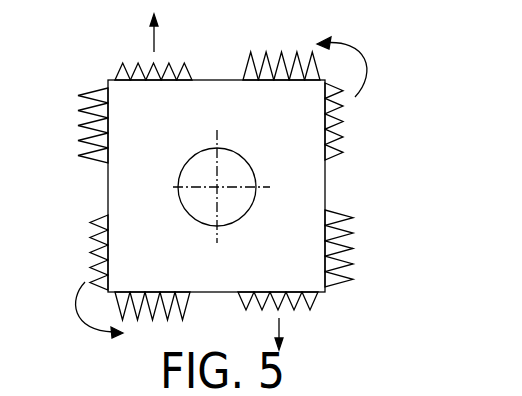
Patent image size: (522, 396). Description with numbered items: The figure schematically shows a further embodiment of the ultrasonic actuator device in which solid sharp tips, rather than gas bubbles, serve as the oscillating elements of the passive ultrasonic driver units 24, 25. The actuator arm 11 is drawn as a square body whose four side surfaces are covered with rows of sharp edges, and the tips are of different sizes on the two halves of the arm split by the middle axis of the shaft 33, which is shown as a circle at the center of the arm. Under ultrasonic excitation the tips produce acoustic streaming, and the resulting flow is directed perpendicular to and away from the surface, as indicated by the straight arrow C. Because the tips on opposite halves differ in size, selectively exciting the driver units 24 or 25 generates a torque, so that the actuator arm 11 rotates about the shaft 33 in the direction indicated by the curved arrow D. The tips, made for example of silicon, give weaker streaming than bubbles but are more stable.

The actuator arm 11 is at (143, 187).
The passive ultrasonic driver unit 24 is at (265, 77).
The passive ultrasonic driver unit 25 is at (312, 303).
The shaft 33 is at (230, 203).
The rotation arrow D is at (371, 83).
The streaming flow arrow C is at (282, 320).